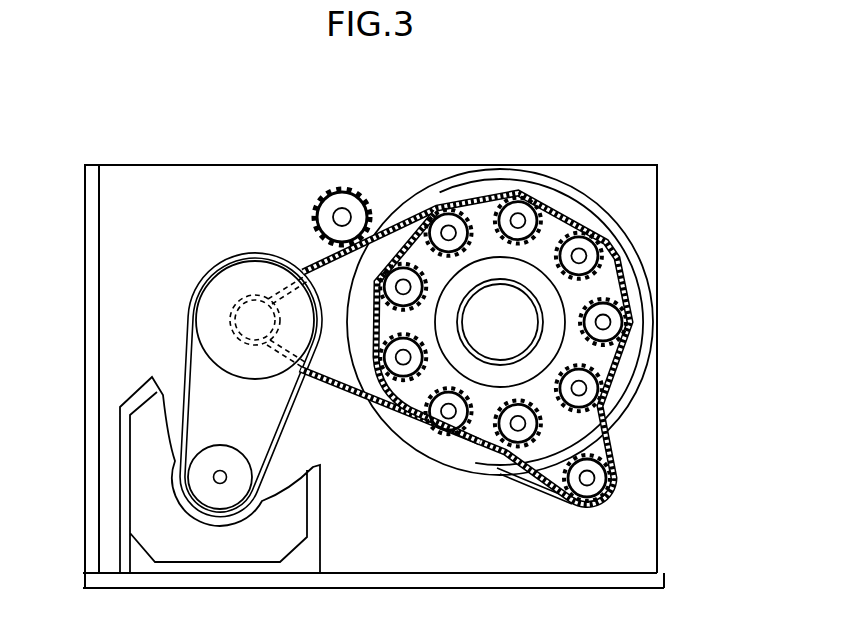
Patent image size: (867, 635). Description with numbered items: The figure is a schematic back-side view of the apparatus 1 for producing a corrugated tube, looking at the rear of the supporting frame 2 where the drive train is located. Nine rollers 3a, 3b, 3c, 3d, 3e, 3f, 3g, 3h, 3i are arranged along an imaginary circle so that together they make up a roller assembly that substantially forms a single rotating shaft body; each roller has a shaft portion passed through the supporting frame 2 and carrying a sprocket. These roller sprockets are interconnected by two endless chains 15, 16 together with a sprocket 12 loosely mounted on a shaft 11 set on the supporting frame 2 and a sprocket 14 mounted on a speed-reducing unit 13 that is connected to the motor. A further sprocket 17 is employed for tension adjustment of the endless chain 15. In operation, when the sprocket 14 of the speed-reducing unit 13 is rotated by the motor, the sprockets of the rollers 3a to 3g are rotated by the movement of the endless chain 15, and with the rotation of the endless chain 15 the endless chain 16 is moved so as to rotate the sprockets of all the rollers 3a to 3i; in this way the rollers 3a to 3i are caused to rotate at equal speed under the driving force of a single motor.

The apparatus for producing a corrugated tube 1 is at (662, 582).
The supporting frame 2 is at (142, 165).
The roller 3a is at (447, 207).
The roller 3b is at (519, 195).
The roller 3c is at (592, 240).
The roller 3d is at (622, 322).
The roller 3e is at (600, 395).
The roller 3f is at (512, 440).
The roller 3g is at (445, 428).
The roller 3h is at (398, 380).
The roller 3i is at (382, 296).
The shaft 11 is at (590, 490).
The sprocket 12 is at (567, 498).
The speed-reducing unit 13 is at (190, 293).
The sprocket 14 is at (252, 300).
The endless chain 15 is at (326, 398).
The endless chain 16 is at (622, 462).
The sprocket 17 is at (342, 190).